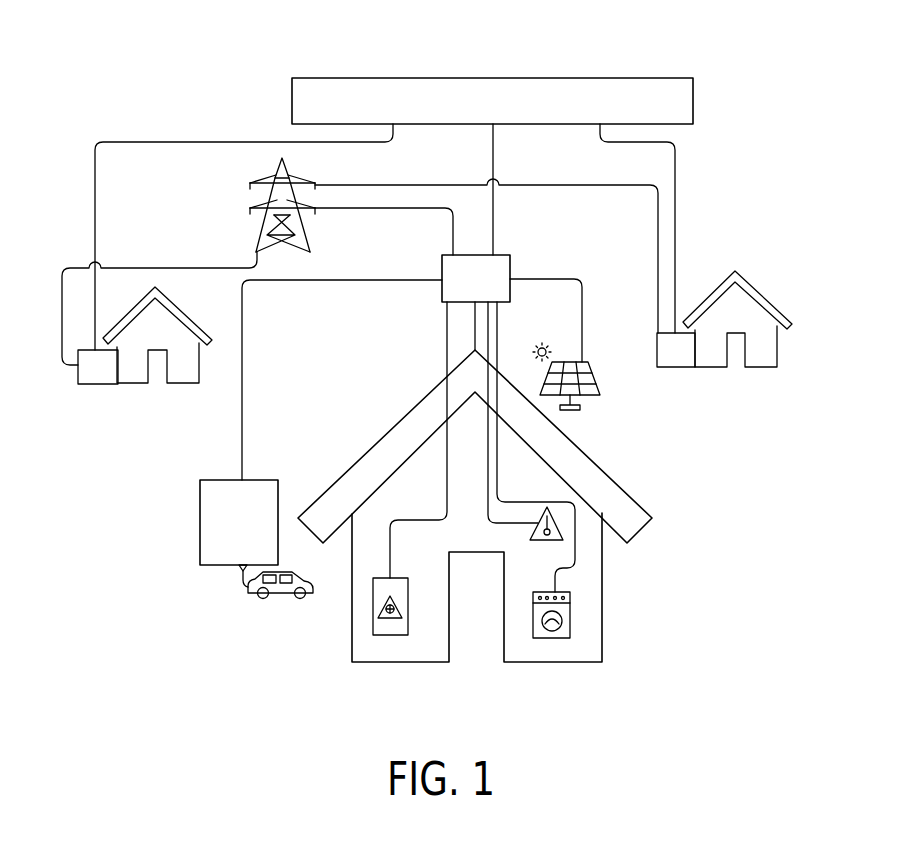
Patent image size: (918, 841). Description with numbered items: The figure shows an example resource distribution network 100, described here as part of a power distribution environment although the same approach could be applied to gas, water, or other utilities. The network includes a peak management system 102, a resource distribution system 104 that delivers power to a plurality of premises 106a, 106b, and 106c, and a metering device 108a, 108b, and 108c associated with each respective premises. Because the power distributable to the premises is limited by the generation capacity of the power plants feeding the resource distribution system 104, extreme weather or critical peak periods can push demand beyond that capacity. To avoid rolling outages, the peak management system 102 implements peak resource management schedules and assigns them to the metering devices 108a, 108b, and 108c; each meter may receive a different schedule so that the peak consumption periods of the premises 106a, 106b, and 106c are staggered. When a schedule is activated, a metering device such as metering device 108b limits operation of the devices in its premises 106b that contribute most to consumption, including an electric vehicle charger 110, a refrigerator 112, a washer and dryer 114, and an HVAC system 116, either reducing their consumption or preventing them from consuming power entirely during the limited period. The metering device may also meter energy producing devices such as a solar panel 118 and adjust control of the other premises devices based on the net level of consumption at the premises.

The resource distribution network 100 is at (745, 95).
The peak management system 102 is at (290, 109).
The resource distribution system 104 is at (250, 207).
The premises 106a is at (184, 380).
The premises 106b is at (418, 663).
The premises 106c is at (762, 365).
The metering device 108a is at (112, 380).
The metering device 108b is at (512, 263).
The metering device 108c is at (690, 365).
The electric vehicle (EV) charger 110 is at (198, 520).
The refrigerator 112 is at (380, 637).
The washer and dryer 114 is at (572, 612).
The heating, ventilation, and air conditioning (HVAC) system 116 is at (563, 530).
The solar panel 118 is at (599, 392).